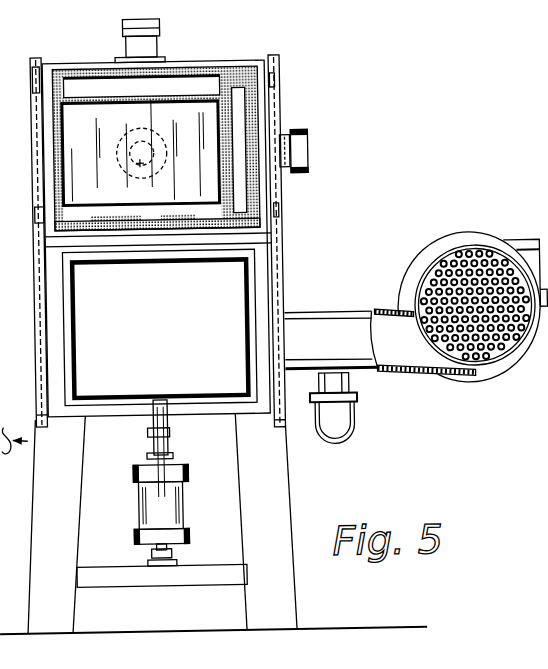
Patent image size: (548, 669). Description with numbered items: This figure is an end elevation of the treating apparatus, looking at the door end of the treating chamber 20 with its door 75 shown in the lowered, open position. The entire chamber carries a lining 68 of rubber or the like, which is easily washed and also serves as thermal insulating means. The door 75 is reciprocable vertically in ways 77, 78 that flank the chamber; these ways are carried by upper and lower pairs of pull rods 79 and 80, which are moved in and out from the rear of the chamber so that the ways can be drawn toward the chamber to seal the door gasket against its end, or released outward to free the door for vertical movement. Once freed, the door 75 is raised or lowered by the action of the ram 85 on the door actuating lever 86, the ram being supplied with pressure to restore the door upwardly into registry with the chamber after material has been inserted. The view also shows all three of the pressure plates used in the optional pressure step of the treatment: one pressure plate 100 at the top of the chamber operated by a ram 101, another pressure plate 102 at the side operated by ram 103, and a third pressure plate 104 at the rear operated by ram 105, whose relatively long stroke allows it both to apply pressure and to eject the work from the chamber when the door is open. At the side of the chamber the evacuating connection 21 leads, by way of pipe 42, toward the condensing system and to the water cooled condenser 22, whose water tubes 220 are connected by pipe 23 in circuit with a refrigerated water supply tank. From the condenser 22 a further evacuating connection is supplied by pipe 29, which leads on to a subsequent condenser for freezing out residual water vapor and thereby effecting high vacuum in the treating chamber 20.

The treating chamber 20 is at (200, 71).
The evacuating connection 21 is at (322, 328).
The water cooled condenser 22 is at (443, 257).
The pipe 23 is at (2, 423).
The pipe 29 is at (529, 247).
The pipe 42 is at (356, 392).
The lining 68 is at (192, 225).
The door 75 is at (263, 297).
The way 77 is at (36, 259).
The way 78 is at (282, 252).
The upper pull rods 79 is at (37, 87).
The lower pull rods 80 is at (35, 213).
The ram 85 is at (172, 510).
The door actuating lever 86 is at (158, 448).
The pressure plate 100 is at (176, 86).
The ram 101 is at (162, 48).
The pressure plate 102 is at (241, 116).
The ram 103 is at (288, 147).
The pressure plate 104 is at (84, 130).
The ram 105 is at (130, 183).
The water tubes 220 is at (478, 357).